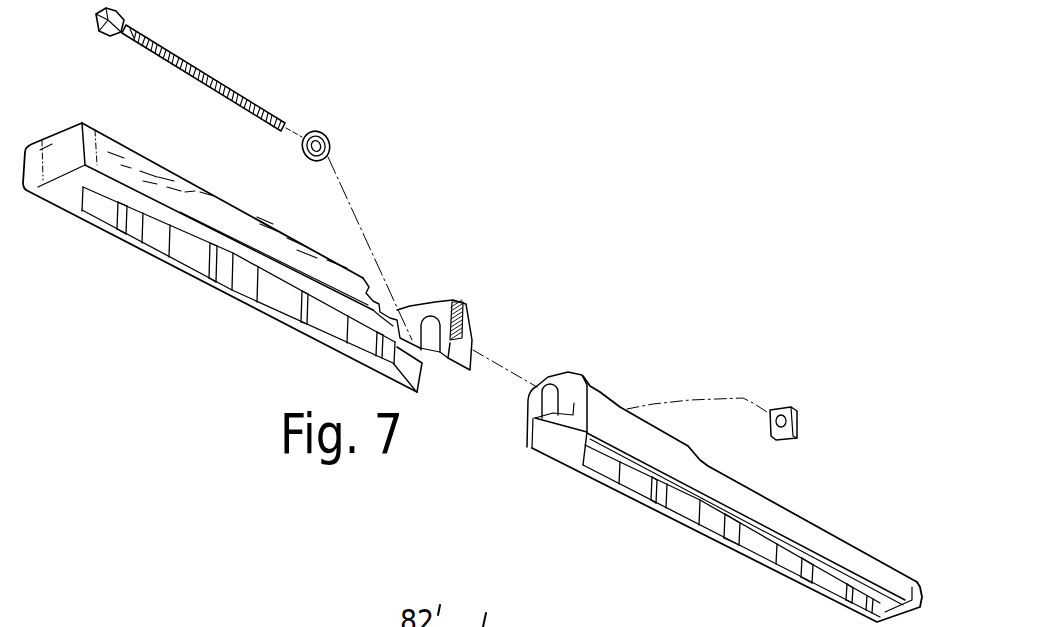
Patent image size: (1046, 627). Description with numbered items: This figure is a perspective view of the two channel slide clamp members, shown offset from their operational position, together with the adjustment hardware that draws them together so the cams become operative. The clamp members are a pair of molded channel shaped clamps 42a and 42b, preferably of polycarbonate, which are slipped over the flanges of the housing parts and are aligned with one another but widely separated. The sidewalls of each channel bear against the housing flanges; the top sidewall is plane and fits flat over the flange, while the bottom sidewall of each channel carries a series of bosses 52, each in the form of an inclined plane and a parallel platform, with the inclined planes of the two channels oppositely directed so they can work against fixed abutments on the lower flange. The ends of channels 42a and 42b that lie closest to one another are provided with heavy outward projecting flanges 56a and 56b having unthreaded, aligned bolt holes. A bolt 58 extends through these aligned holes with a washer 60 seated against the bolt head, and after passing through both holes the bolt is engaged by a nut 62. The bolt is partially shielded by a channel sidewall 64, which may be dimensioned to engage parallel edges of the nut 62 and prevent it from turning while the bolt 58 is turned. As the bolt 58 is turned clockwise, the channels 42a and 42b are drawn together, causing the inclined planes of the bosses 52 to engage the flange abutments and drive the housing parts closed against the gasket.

The channel shaped clamp member 42a is at (789, 518).
The channel shaped clamp member 42b is at (175, 182).
The bosses 52 is at (312, 328).
The outward projecting flange 56a is at (567, 383).
The outward projecting flange 56b is at (445, 312).
The bolt 58 is at (213, 80).
The washer 60 is at (331, 144).
The nut 62 is at (806, 430).
The channel sidewall 64 is at (673, 423).